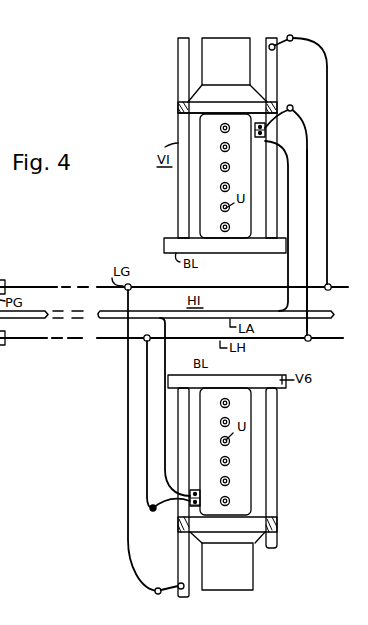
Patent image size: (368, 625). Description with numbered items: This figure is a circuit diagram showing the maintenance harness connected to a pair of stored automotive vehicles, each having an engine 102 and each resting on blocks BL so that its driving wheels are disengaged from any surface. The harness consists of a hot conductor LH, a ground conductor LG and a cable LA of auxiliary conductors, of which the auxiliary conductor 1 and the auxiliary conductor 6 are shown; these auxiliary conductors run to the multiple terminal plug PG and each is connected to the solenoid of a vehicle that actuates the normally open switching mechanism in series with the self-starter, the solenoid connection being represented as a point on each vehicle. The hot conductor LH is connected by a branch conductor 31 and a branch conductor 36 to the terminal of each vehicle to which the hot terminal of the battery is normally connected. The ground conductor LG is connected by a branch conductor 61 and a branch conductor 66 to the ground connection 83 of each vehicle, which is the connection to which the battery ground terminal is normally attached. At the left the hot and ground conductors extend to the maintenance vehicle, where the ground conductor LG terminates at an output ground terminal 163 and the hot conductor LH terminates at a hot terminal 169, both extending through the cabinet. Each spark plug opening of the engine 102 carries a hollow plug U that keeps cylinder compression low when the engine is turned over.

The auxiliary conductor 1 is at (288, 263).
The auxiliary conductor 6 is at (175, 382).
The branch conductor 31 is at (307, 146).
The branch conductor 36 is at (160, 431).
The branch conductor 61 is at (328, 196).
The branch conductor 66 is at (128, 388).
The ground connection 83 is at (293, 37).
The engine 102 is at (212, 182).
The output ground terminal 163 is at (3, 286).
The hot terminal 169 is at (5, 341).